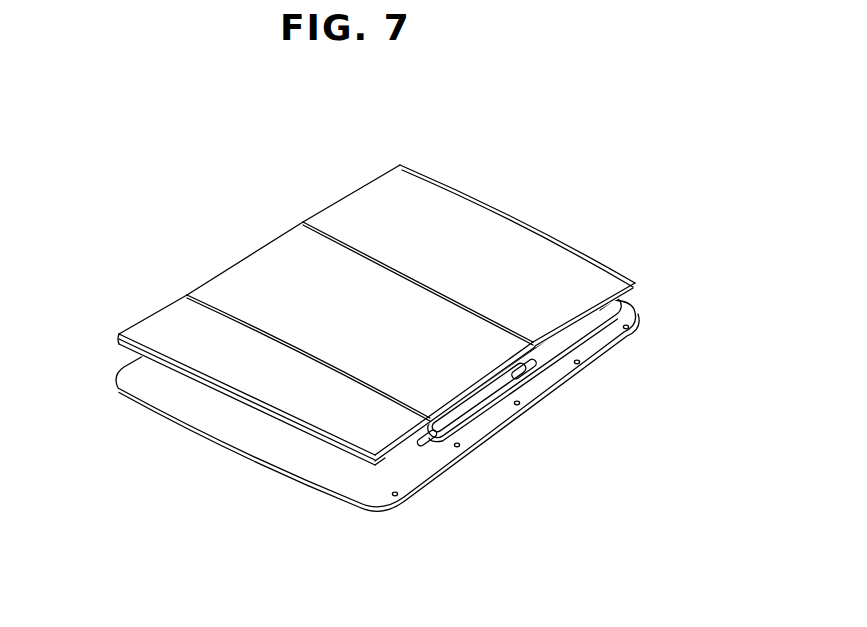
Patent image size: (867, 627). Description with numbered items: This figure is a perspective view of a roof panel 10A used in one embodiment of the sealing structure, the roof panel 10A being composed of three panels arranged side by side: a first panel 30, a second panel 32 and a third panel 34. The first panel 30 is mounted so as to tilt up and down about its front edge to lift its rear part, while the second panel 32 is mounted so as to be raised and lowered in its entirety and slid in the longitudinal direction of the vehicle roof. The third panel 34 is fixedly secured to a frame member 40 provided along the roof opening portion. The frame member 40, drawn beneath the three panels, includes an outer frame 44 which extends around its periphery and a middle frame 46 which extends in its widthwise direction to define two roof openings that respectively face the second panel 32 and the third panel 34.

The roof panel 10A is at (332, 285).
The first panel 30 is at (168, 327).
The second panel 32 is at (253, 288).
The third panel 34 is at (360, 225).
The frame member 40 is at (411, 409).
The outer frame 44 is at (353, 493).
The middle frame 46 is at (549, 378).